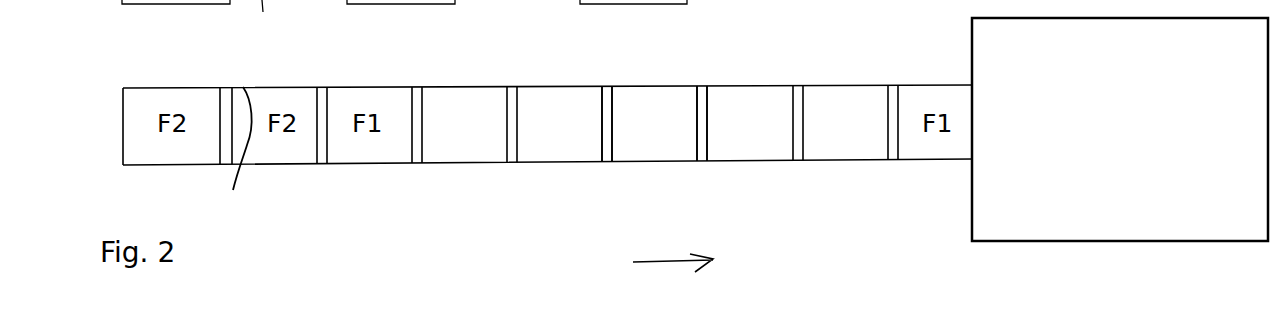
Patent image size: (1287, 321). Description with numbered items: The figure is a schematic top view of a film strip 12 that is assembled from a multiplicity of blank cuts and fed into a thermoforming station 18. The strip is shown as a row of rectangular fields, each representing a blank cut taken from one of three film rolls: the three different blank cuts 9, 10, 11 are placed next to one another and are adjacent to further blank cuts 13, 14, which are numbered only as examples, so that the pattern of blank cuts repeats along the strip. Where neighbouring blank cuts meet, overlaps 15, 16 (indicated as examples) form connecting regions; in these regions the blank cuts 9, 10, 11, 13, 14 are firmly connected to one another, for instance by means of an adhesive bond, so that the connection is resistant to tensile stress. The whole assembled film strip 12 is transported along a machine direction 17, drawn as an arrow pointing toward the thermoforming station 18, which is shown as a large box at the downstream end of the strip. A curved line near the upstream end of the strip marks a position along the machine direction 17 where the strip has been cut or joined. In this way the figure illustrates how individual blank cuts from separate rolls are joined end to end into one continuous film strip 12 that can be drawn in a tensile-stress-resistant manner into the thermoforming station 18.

The blank cut 9 is at (573, 150).
The blank cut 10 is at (655, 150).
The blank cut 11 is at (742, 153).
The film strip 12 is at (472, 187).
The further blank cut 13 is at (847, 153).
The further blank cut 14 is at (437, 153).
The overlap 15 is at (608, 112).
The separator 16 is at (702, 112).
The machine direction 17 is at (682, 297).
The thermoforming station 18 is at (280, 168).